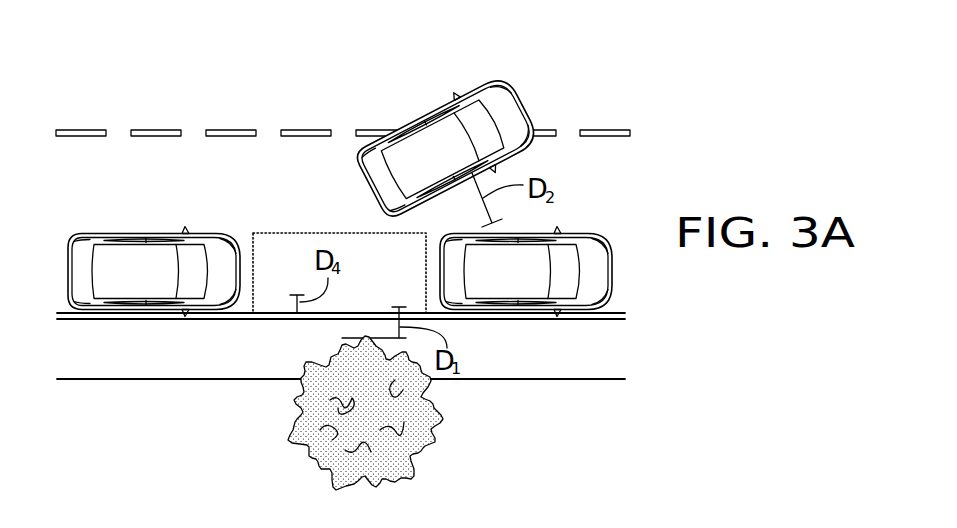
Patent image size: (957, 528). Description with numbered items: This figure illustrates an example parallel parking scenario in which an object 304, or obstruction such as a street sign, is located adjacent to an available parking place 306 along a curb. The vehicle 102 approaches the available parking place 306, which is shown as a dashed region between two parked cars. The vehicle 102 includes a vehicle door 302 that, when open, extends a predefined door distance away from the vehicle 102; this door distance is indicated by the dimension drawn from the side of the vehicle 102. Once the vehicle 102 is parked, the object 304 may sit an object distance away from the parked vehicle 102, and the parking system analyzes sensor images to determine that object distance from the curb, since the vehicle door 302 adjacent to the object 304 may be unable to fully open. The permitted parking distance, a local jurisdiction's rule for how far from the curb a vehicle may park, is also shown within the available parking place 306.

The vehicle 102 is at (489, 92).
The vehicle door 302 is at (482, 178).
The object 304 is at (290, 440).
The available parking place 306 is at (340, 233).